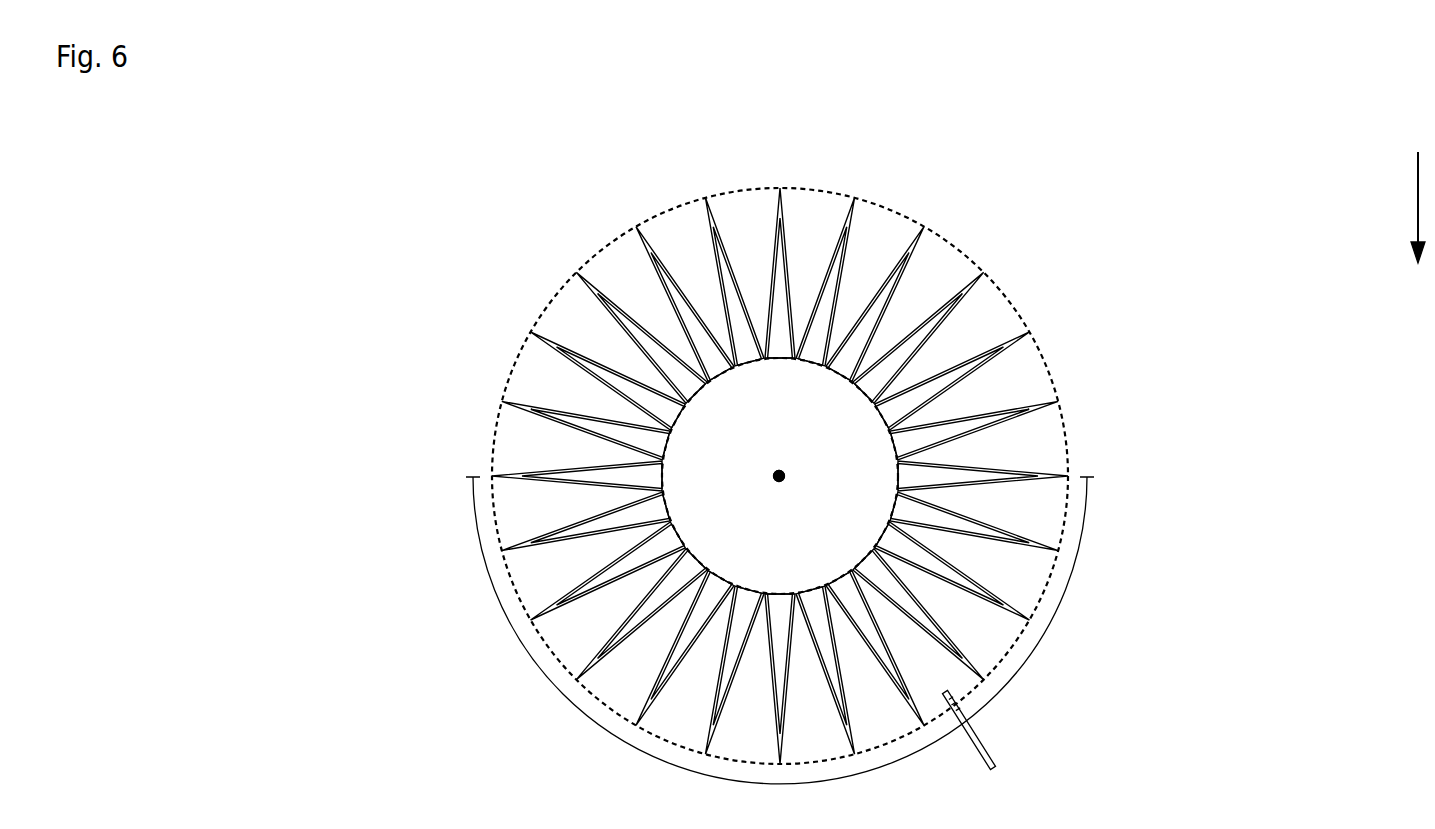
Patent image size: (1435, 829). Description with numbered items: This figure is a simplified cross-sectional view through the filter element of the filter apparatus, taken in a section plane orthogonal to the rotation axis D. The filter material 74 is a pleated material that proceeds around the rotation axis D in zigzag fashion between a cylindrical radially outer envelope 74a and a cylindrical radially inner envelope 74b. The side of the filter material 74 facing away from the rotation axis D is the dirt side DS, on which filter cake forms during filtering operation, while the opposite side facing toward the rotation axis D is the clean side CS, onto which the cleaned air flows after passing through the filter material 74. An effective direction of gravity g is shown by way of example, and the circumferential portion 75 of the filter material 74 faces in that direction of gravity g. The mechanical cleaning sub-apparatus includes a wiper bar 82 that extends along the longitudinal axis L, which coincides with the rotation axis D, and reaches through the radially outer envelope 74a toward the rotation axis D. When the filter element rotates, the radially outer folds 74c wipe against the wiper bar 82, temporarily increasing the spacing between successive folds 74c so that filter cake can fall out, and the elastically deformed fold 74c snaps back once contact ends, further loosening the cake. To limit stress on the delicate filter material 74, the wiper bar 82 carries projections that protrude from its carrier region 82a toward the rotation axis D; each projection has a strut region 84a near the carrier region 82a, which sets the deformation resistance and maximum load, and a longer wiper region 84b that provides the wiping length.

The filter material 74 is at (957, 392).
The radially outer envelope 74a is at (1068, 442).
The radially inner envelope 74b is at (753, 360).
The radially outer folds 74c is at (1029, 333).
The dirt side DS is at (852, 250).
The clean side CS is at (773, 337).
The rotation axis D is at (777, 480).
The longitudinal axis L is at (753, 507).
The circumferential portion 75 is at (1064, 607).
The wiper bar 82 is at (994, 710).
The carrier region 82a is at (980, 743).
The strut region 84a is at (957, 708).
The wiper region 84b is at (950, 700).
The effective direction of gravity g is at (1418, 172).